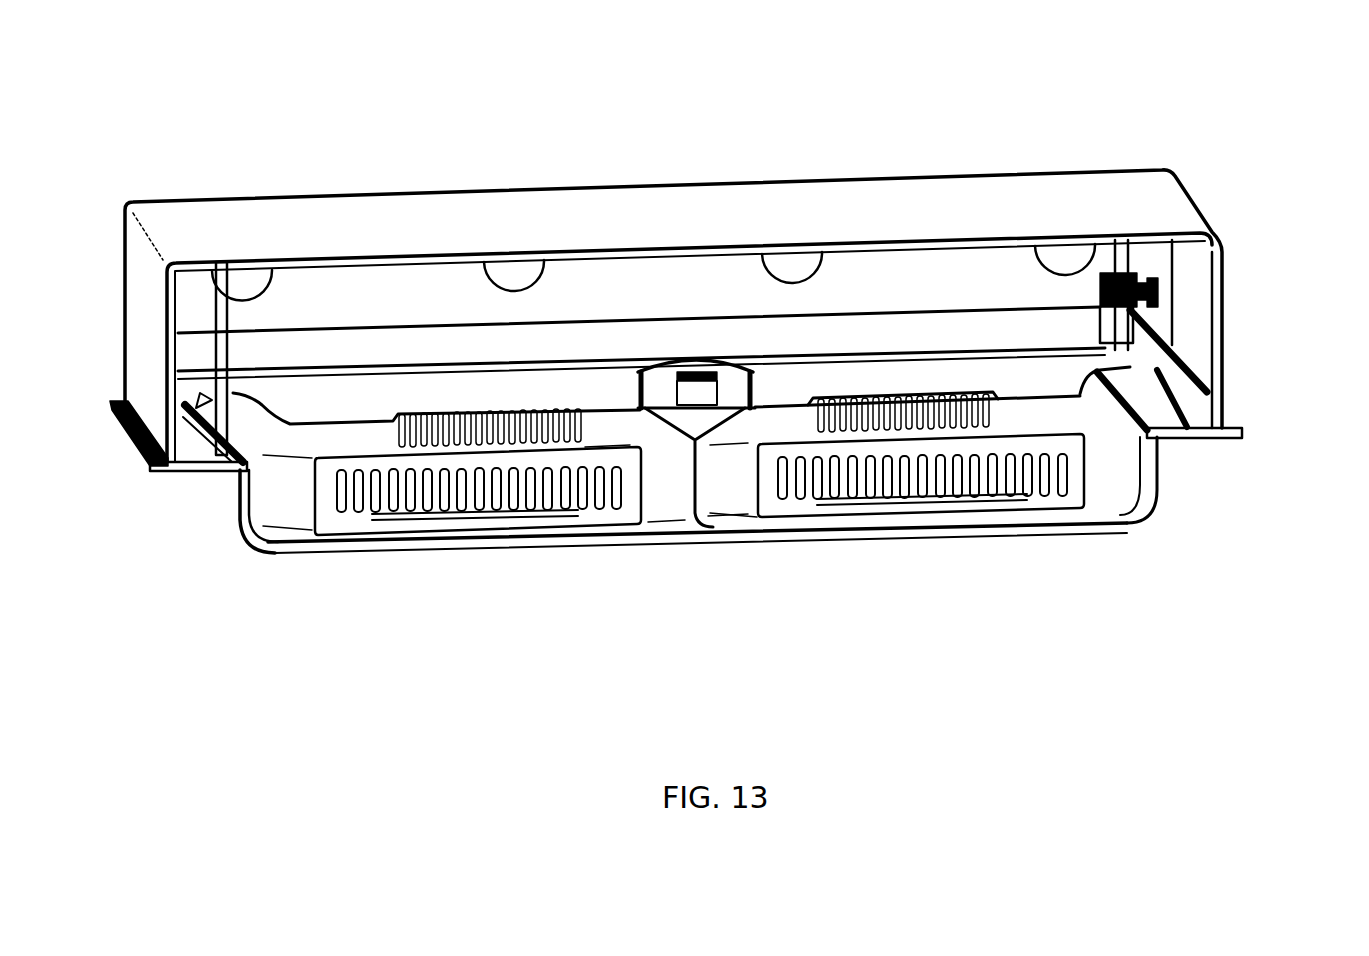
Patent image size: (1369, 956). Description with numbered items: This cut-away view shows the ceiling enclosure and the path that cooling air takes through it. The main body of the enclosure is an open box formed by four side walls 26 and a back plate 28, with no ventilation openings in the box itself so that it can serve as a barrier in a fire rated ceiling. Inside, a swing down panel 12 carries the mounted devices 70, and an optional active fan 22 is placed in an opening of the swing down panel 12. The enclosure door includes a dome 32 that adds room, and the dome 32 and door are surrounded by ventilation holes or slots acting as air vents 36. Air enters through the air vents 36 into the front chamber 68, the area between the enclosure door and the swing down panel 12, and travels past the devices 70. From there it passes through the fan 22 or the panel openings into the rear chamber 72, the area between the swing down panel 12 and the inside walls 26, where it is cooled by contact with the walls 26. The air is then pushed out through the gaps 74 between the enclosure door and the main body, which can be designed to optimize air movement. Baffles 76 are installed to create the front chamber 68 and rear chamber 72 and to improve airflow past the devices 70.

The swing down panel 12 is at (771, 531).
The fan 22 is at (702, 390).
The side walls 26 is at (122, 292).
The back plate 28 is at (675, 222).
The dome 32 is at (248, 528).
The air vents 36 is at (207, 474).
The front chamber 68 is at (1070, 380).
The devices 70 is at (983, 507).
The rear chamber 72 is at (975, 272).
The gaps 74 is at (1213, 443).
The baffles 76 is at (210, 397).